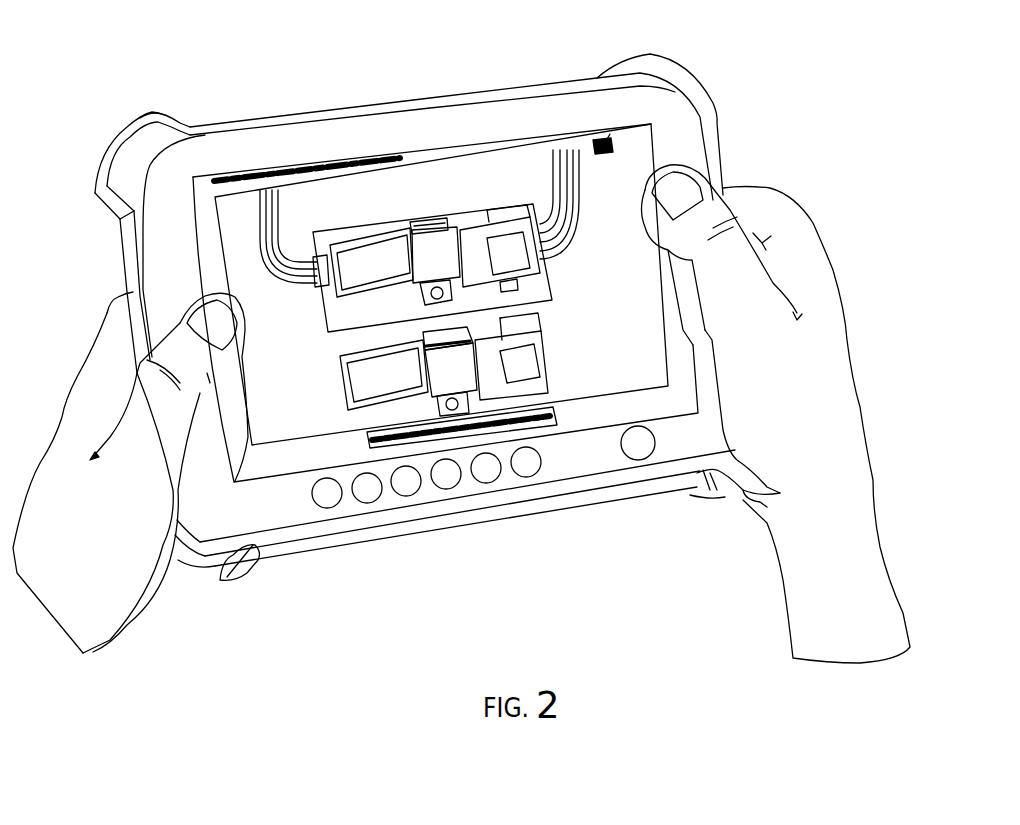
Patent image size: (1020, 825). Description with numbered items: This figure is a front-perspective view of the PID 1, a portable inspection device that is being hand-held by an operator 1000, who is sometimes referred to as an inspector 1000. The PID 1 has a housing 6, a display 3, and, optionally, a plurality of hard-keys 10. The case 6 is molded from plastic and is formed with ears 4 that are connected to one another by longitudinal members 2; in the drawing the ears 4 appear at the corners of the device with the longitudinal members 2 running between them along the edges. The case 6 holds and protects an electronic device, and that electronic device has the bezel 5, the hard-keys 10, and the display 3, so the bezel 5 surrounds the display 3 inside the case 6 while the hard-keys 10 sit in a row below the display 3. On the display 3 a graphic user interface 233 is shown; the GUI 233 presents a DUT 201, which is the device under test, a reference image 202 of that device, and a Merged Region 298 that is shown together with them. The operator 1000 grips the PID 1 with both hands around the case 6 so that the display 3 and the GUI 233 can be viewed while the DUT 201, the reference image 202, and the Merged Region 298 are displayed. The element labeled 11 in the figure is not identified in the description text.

The PID 1 is at (214, 58).
The longitudinal members 2 is at (305, 115).
The display 3 is at (448, 182).
The ears 4 is at (205, 572).
The bezel 5 is at (233, 145).
The housing 6 is at (150, 132).
The hard-keys 10 is at (333, 508).
The label strip 11 is at (448, 436).
The DUT 201 is at (477, 240).
The reference image 202 is at (498, 372).
The graphic user interface 233 is at (623, 173).
The Merged Region 298 is at (375, 228).
The operator 1000 is at (62, 408).